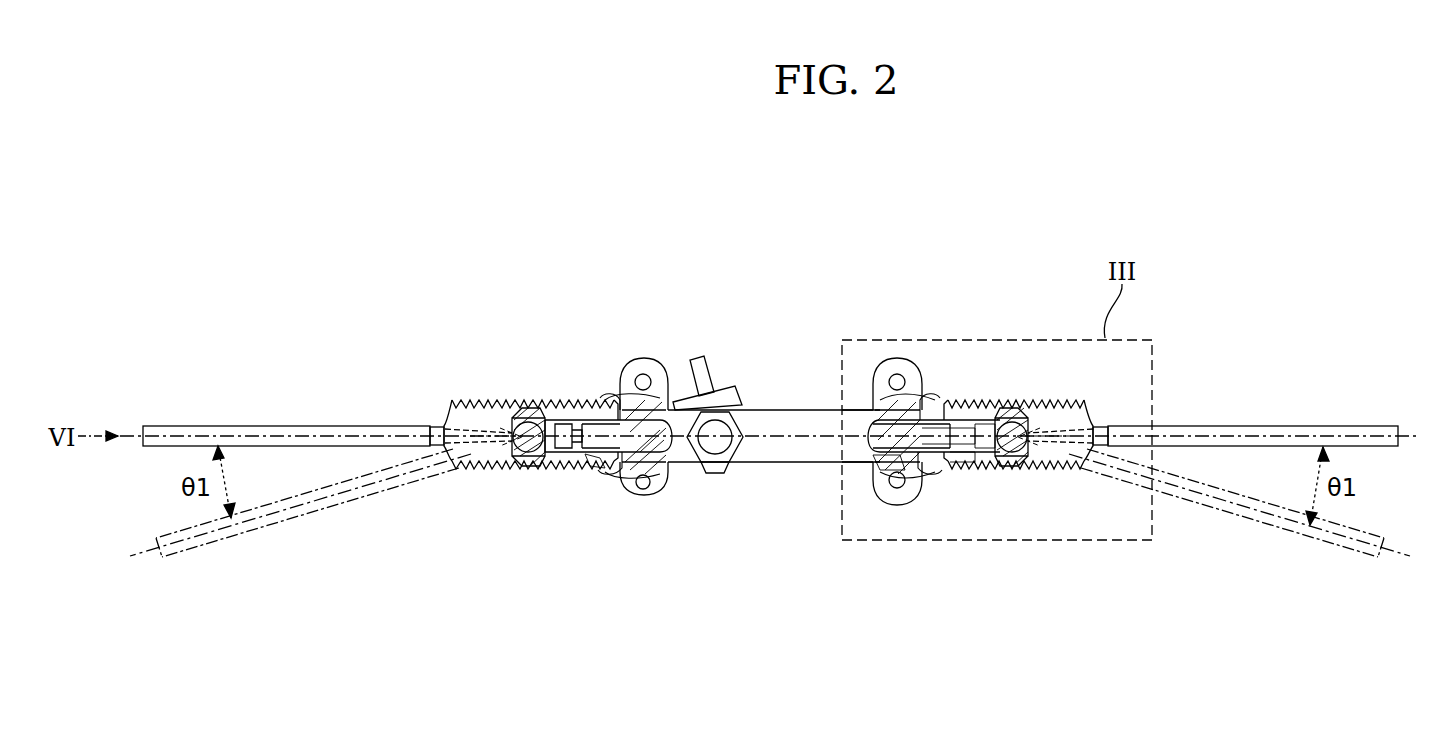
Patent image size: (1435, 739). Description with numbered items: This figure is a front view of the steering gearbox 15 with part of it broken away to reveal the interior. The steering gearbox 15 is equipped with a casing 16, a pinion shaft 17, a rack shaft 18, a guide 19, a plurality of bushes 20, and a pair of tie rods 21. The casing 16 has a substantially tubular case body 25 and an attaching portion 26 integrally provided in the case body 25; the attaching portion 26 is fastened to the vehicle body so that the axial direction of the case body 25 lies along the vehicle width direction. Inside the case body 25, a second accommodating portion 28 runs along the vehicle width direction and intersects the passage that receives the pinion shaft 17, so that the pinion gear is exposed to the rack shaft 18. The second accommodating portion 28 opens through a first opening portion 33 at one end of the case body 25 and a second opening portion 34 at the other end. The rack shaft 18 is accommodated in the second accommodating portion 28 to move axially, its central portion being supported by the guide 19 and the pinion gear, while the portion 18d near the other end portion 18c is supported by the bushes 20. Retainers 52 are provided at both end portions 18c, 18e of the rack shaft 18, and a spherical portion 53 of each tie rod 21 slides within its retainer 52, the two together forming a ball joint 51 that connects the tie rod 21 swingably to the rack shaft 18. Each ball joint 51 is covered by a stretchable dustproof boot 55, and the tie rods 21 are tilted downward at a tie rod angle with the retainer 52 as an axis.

The steering gearbox 15 is at (590, 332).
The casing 16 is at (785, 410).
The pinion shaft 17 is at (702, 356).
The rack shaft 18 is at (948, 402).
The other end portion of the rack shaft 18c is at (990, 466).
The portion near the other end portion of the rack shaft 18d is at (928, 455).
The end portion of the rack shaft 18e is at (558, 402).
The guide 19 is at (723, 475).
The bushes 20 is at (948, 412).
The tie rod 21 is at (328, 424).
The case body 25 is at (822, 408).
The attaching portion 26 is at (645, 358).
The second accommodating portion 28 is at (878, 470).
The first opening portion 33 is at (590, 468).
The second opening portion 34 is at (966, 465).
The ball joint 51 is at (795, 547).
The retainer 52 is at (520, 467).
The spherical portion 53 is at (545, 467).
The dustproof boot 55 is at (476, 400).